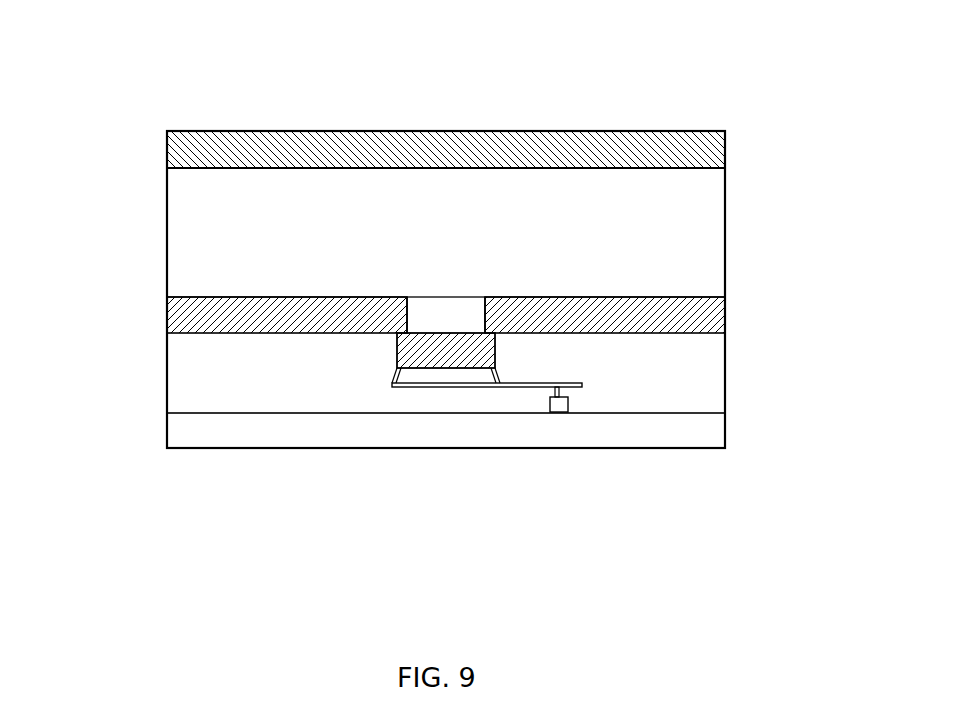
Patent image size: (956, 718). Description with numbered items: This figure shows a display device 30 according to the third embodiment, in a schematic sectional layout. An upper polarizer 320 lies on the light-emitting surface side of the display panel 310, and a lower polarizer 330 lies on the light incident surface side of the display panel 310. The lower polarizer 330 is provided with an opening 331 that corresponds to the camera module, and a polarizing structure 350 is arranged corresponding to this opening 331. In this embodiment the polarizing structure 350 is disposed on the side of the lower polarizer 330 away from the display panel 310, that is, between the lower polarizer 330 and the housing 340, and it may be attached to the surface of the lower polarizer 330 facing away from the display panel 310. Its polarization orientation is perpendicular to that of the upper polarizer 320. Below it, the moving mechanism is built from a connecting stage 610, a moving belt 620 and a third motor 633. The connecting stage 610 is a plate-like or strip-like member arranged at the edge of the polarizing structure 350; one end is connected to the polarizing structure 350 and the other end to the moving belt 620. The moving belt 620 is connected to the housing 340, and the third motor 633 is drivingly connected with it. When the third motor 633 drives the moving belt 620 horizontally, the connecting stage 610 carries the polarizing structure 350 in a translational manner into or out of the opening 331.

The display device 30 is at (148, 70).
The upper polarizer 320 is at (678, 149).
The display panel 310 is at (673, 231).
The lower polarizer 330 is at (679, 313).
The opening 331 is at (403, 333).
The housing 340 is at (678, 441).
The polarizing structure 350 is at (470, 353).
The connecting stage 610 is at (497, 388).
The moving belt 620 is at (518, 388).
The third motor 633 is at (599, 460).